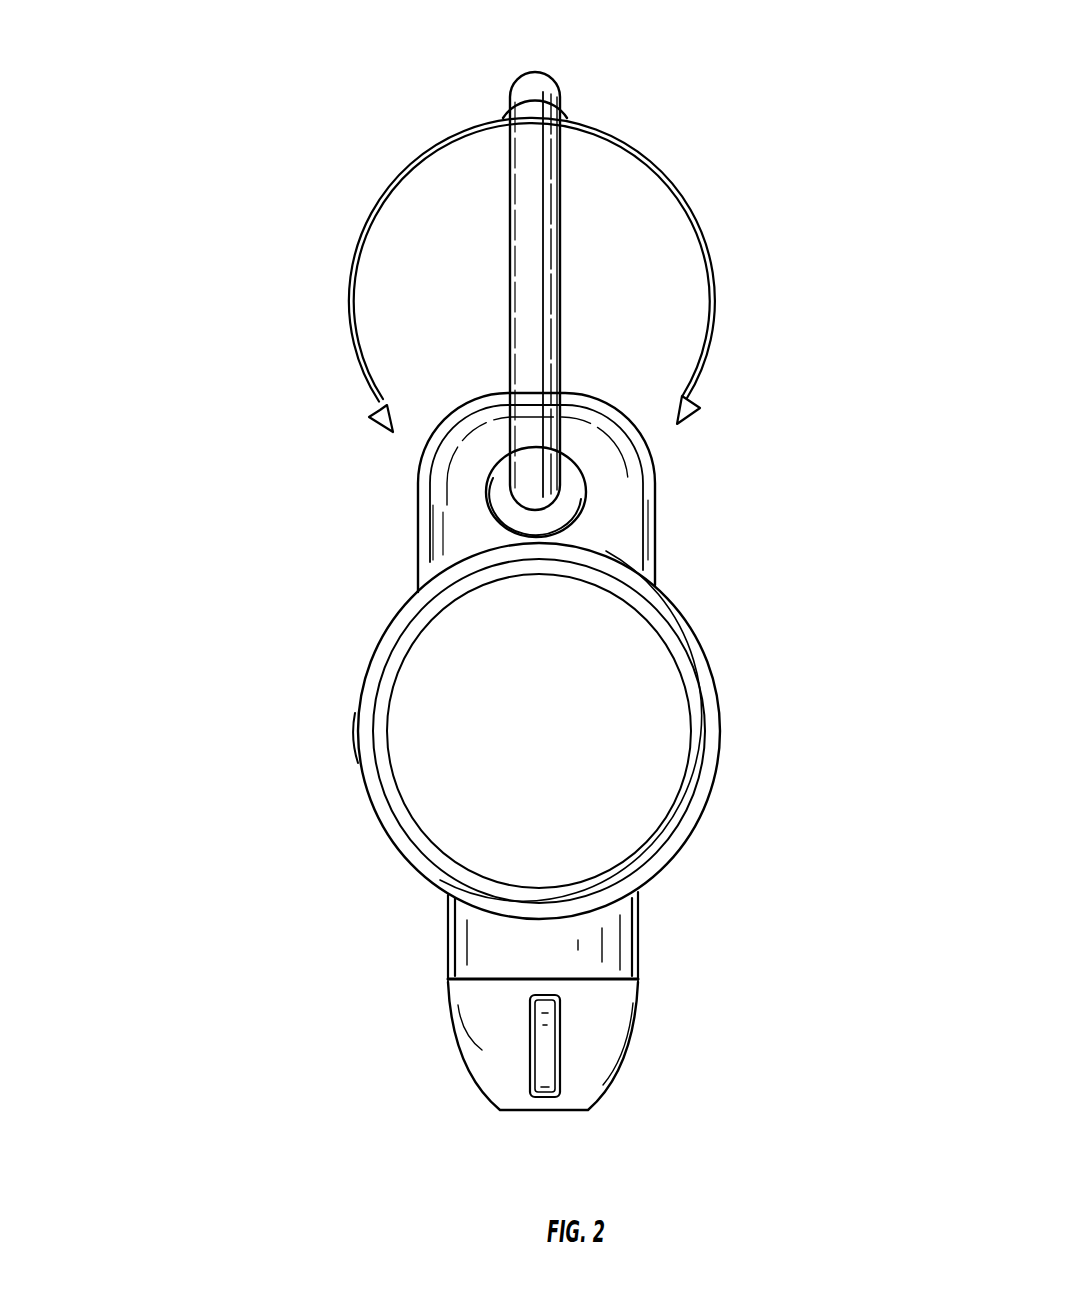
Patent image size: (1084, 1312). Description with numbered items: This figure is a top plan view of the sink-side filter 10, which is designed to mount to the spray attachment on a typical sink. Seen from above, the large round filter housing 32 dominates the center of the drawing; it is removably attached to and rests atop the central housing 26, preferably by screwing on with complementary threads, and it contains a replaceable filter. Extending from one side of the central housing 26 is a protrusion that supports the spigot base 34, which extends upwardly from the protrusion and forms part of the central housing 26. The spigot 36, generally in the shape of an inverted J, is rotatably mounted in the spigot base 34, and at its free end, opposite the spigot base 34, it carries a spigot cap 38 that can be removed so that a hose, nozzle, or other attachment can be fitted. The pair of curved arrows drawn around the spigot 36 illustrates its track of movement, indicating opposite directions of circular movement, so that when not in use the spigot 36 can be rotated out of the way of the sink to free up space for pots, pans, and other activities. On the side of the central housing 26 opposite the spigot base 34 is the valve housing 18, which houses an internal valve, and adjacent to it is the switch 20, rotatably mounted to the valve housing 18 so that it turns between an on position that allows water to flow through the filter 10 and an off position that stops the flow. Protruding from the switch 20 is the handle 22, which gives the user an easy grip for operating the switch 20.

The sink-side filter 10 is at (320, 620).
The valve housing 18 is at (588, 950).
The switch 20 is at (588, 1028).
The handle 22 is at (543, 1045).
The central housing 26 is at (613, 521).
The filter housing 32 is at (648, 710).
The spigot base 34 is at (567, 490).
The spigot 36 is at (535, 172).
The spigot cap 38 is at (570, 78).